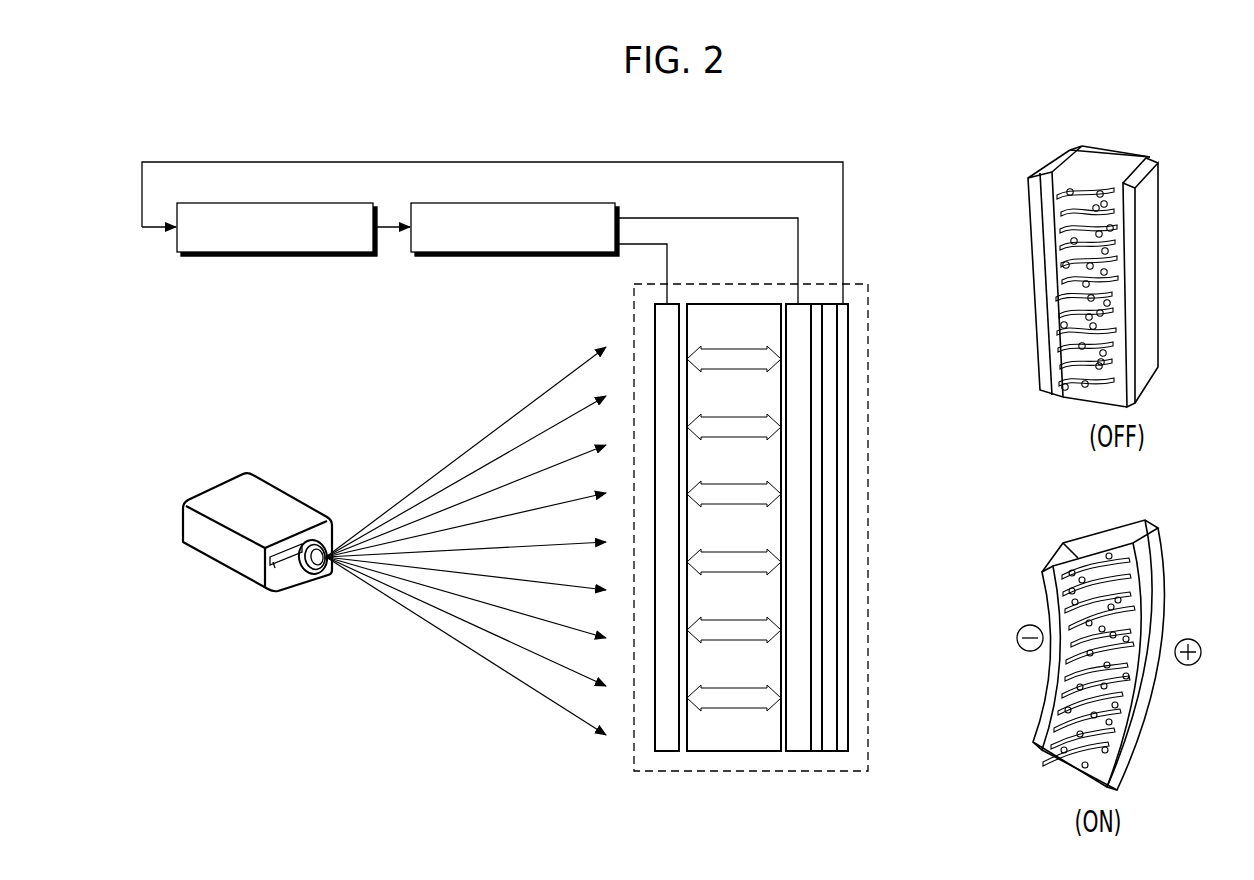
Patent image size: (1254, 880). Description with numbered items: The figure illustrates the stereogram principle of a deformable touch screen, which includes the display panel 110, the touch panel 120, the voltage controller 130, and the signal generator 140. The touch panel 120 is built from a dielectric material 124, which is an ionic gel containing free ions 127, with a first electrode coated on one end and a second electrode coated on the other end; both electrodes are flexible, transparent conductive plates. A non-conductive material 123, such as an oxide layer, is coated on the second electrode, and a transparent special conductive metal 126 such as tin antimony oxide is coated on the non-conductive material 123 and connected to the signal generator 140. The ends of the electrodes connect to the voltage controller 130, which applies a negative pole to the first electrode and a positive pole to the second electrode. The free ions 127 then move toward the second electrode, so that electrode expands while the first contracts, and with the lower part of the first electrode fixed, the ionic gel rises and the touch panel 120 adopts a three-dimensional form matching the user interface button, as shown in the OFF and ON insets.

The display panel 110 is at (214, 553).
The touch panel 120 is at (870, 560).
The non-conductive material 123 is at (830, 693).
The dielectric material 124 is at (762, 389).
The conductive metal 126 is at (845, 643).
The free ion 127 is at (1133, 571).
The voltage controller 130 is at (513, 256).
The signal generator 140 is at (265, 256).